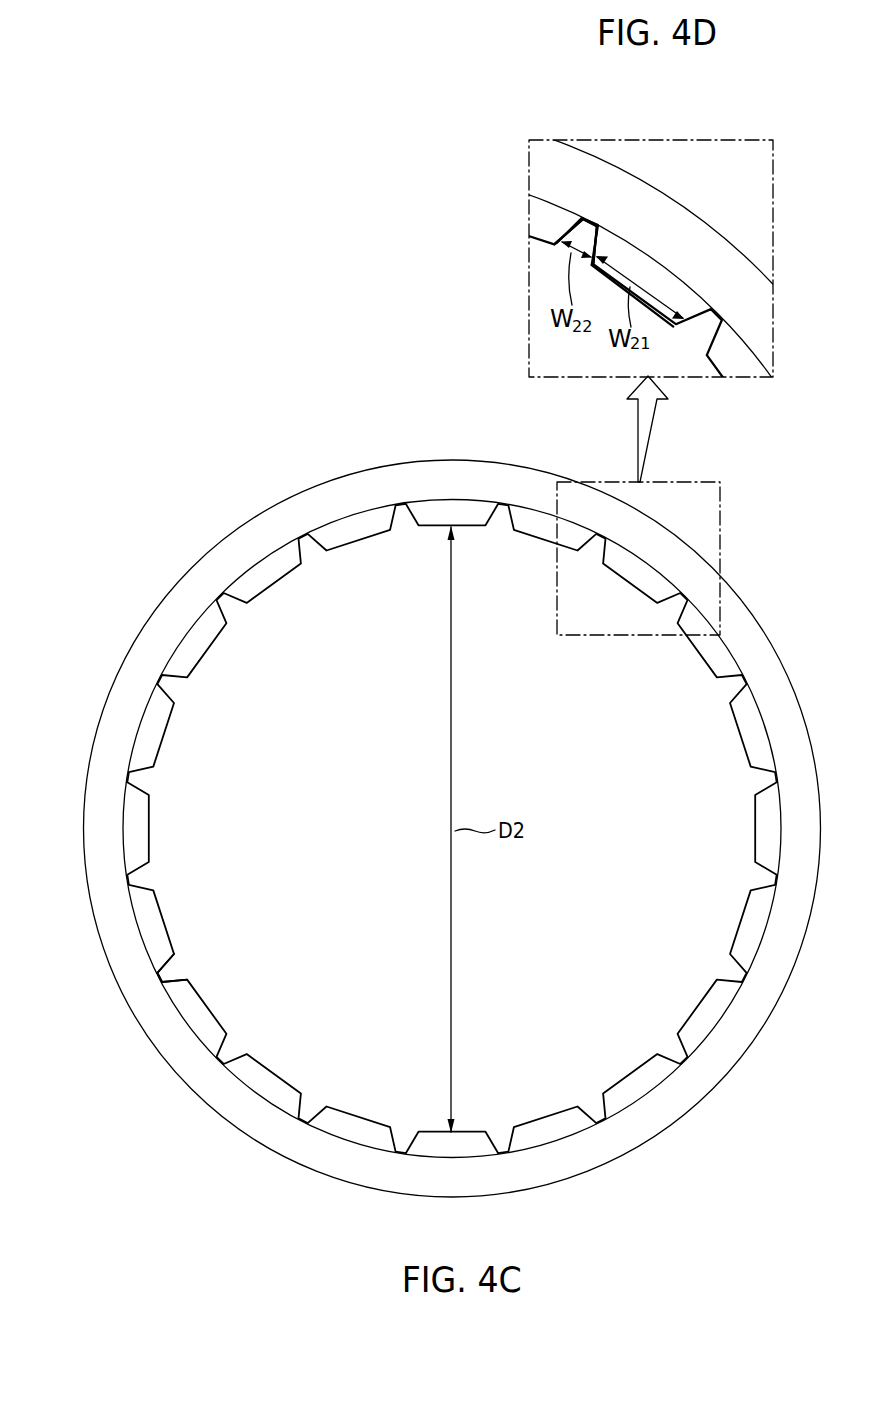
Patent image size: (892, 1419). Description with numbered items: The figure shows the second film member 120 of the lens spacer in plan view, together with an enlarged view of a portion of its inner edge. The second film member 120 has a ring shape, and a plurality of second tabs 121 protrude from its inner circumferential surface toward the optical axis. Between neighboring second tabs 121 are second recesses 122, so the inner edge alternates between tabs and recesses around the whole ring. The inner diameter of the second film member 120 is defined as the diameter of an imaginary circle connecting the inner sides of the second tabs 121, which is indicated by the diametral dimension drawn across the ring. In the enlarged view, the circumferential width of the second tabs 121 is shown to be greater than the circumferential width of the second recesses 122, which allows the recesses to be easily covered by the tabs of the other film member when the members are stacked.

In FIG. 4C, the second film member 120 is at (200, 1126).
In FIG. 4D, the second film member 120 is at (446, 667).
In FIG. 4C, the second tabs 121 is at (200, 1019).
In FIG. 4C, the second recesses 122 is at (170, 978).